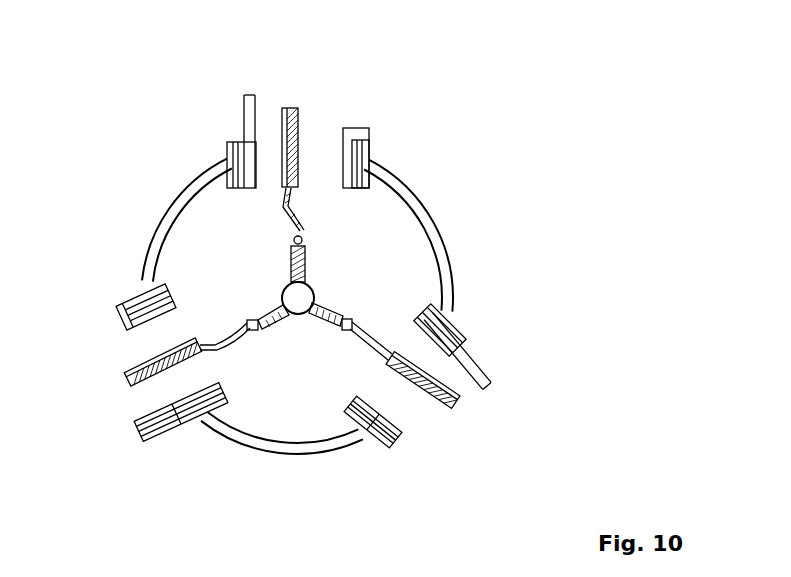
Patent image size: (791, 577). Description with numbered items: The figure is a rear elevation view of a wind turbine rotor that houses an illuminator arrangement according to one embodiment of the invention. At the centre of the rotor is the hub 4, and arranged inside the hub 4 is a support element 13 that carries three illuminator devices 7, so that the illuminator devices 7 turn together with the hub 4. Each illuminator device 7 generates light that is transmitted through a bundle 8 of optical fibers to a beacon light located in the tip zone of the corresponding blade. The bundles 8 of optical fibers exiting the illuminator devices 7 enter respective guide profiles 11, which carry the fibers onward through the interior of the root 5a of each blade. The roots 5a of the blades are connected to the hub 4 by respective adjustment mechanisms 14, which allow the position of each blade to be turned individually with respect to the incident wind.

The hub 4 is at (450, 235).
The root of the blade 5a is at (245, 125).
The illuminator device 7 is at (290, 262).
The bundle of optical fibers 8 is at (299, 228).
The guide profile 11 is at (298, 126).
The support element 13 is at (305, 313).
The adjustment mechanism 14 is at (365, 152).